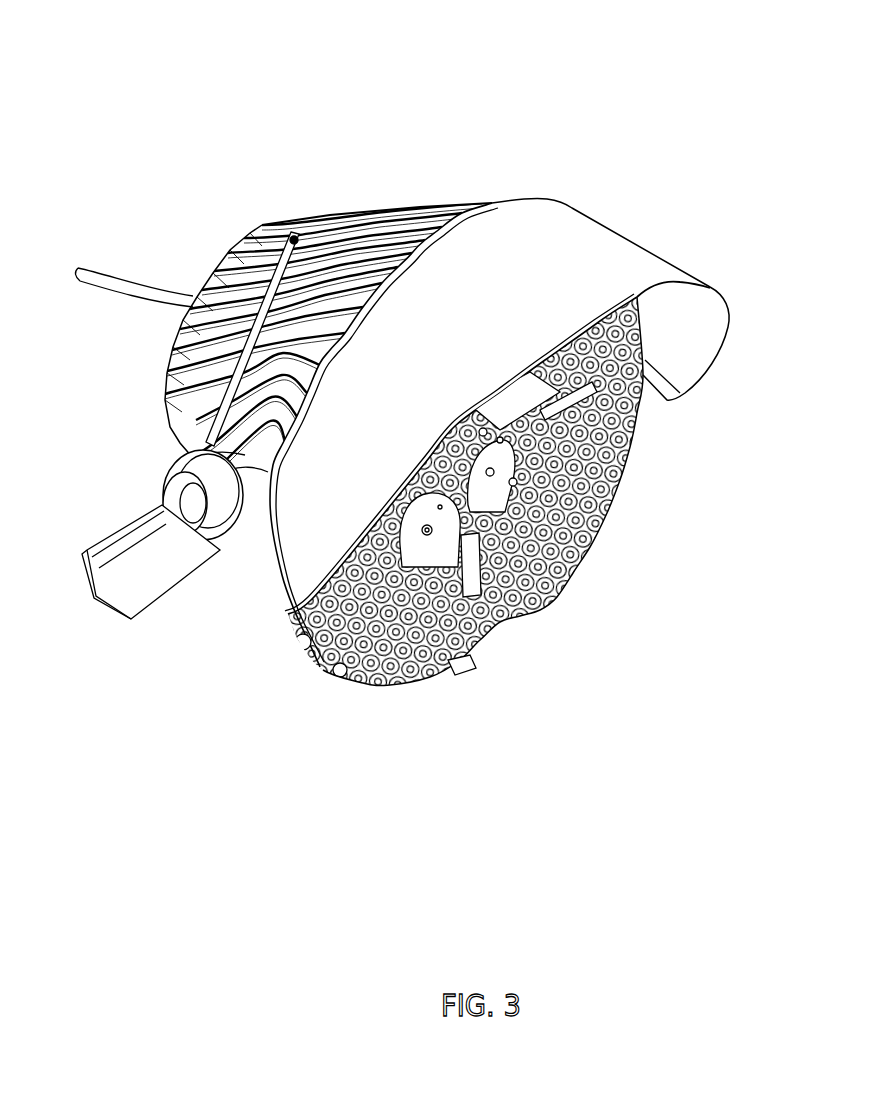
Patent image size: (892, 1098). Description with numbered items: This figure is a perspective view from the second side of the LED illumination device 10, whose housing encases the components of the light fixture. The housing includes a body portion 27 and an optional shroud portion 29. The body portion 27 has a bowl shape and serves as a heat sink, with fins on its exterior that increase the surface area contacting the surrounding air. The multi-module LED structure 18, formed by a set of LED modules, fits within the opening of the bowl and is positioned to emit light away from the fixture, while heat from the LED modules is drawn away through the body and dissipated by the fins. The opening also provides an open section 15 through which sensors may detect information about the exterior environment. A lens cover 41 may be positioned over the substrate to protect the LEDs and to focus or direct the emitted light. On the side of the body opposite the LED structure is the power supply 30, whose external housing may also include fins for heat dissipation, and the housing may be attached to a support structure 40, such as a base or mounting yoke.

The illumination device 10 is at (102, 78).
The open section 15 is at (483, 496).
The multi-module LED structure 18 is at (553, 563).
The body portion 27 is at (427, 207).
The shroud portion 29 is at (648, 265).
The power supply 30 is at (177, 373).
The support structure 40 is at (122, 600).
The lens cover 41 is at (160, 484).